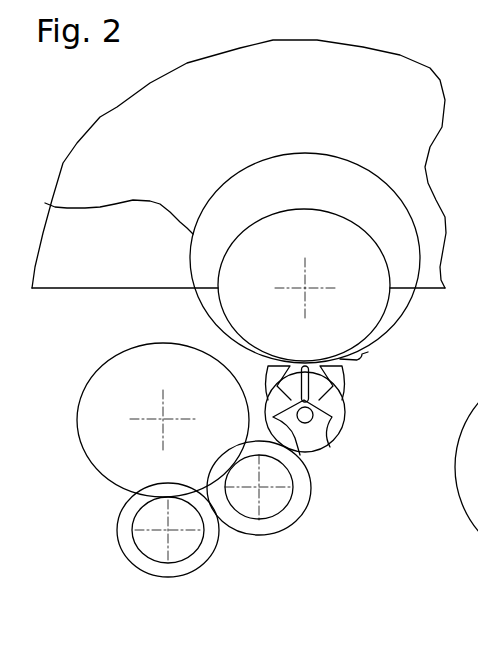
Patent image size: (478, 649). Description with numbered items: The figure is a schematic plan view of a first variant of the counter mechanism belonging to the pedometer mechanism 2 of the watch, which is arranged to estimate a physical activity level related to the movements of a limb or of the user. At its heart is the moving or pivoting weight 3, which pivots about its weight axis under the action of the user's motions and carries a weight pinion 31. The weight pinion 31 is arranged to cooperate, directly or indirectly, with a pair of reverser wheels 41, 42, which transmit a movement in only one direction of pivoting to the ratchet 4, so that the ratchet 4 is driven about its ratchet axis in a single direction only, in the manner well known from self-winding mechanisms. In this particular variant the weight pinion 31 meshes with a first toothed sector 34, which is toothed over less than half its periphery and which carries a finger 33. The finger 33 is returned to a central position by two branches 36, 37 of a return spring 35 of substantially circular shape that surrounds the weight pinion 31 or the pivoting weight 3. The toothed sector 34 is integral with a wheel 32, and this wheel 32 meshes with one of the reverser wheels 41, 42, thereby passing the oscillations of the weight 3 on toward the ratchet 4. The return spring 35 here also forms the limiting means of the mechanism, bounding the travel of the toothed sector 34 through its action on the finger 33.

The pedometer mechanism 2 is at (108, 316).
The weight 3 is at (128, 120).
The ratchet 4 is at (95, 413).
The weight pinion 31 is at (380, 246).
The wheel 32 is at (333, 440).
The finger 33 is at (320, 386).
The first toothed sector 34 is at (262, 360).
The return spring 35 is at (52, 200).
The branch 36 is at (313, 413).
The branch 37 is at (300, 450).
The reverser wheel 41 is at (303, 532).
The reverser wheel 42 is at (201, 583).